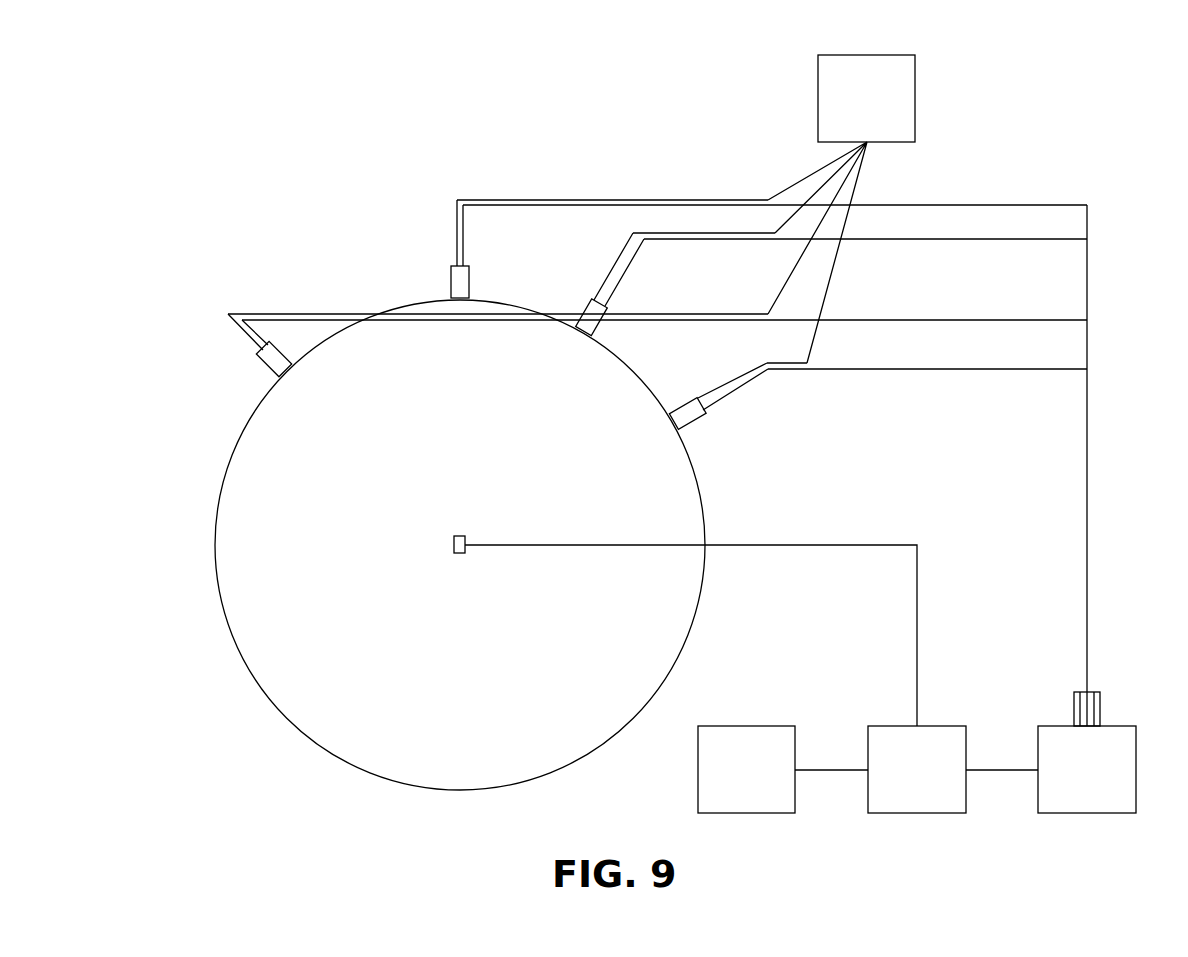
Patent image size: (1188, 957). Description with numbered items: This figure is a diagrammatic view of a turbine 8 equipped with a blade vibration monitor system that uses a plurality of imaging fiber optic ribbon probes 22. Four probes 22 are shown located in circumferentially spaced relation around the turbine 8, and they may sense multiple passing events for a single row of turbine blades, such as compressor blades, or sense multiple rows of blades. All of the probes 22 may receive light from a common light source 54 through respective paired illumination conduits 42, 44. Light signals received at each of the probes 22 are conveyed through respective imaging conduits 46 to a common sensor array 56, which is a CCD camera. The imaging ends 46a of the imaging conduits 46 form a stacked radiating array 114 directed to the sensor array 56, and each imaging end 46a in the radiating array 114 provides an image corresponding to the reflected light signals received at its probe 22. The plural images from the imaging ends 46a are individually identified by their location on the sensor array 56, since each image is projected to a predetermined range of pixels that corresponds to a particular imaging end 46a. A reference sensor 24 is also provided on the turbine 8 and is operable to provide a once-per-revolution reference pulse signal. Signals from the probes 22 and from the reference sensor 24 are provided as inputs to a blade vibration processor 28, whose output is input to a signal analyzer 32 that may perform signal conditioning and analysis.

The turbine 8 is at (216, 589).
The probe 22 is at (446, 281).
The reference sensor 24 is at (454, 544).
The blade vibration processor 28 is at (936, 788).
The signal analyzer 32 is at (766, 788).
The illumination conduit 42 is at (762, 240).
The illumination conduit 44 is at (850, 170).
The imaging conduit 46 is at (1030, 239).
The imaging end 46a is at (1103, 725).
The light source 54 is at (887, 117).
The sensor array 56 is at (1106, 788).
The stacked radiating array 114 is at (1073, 709).